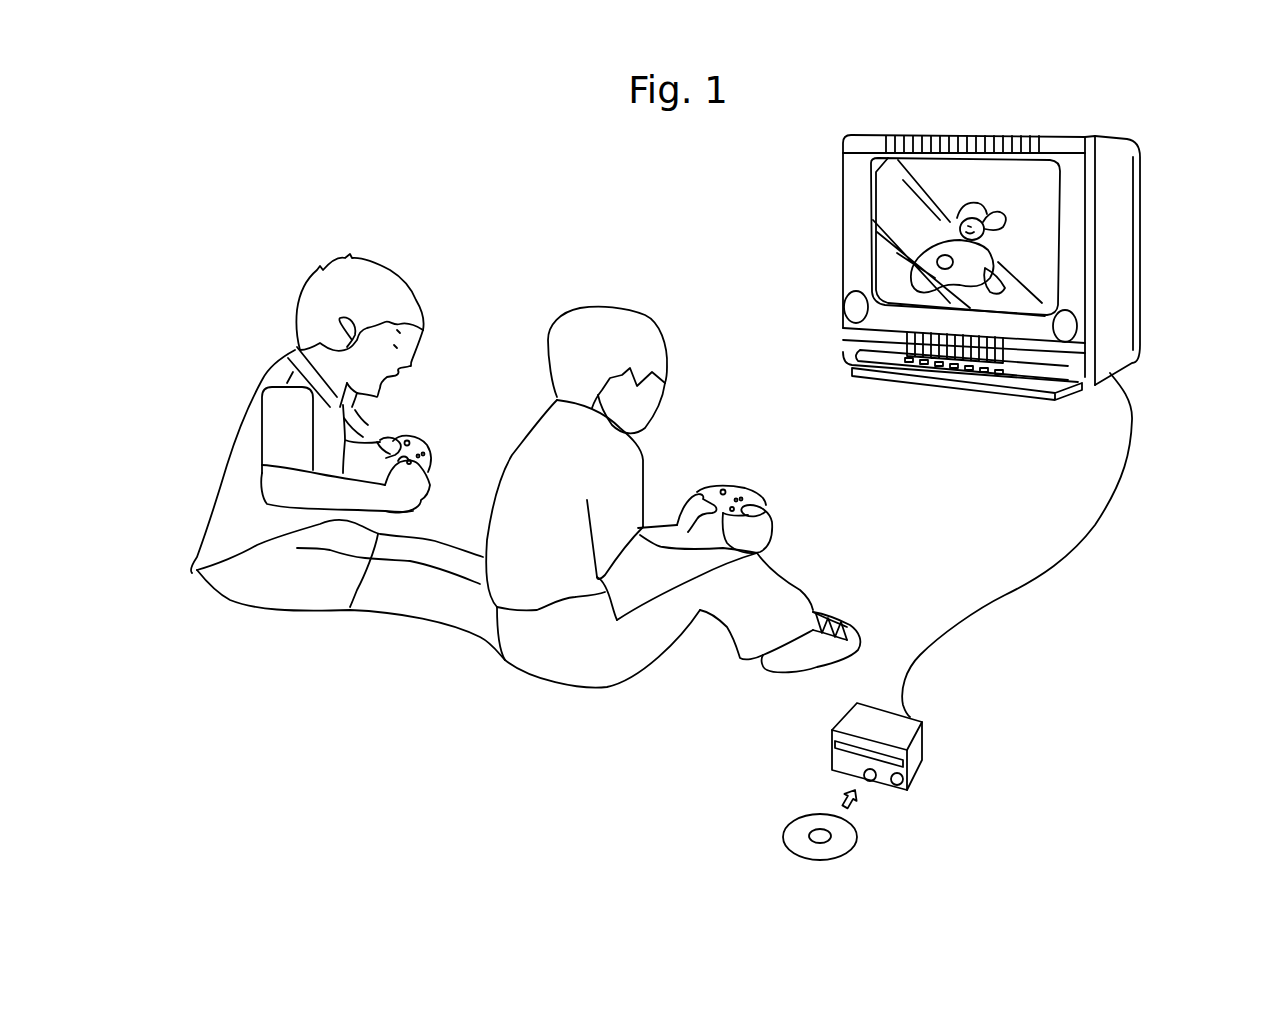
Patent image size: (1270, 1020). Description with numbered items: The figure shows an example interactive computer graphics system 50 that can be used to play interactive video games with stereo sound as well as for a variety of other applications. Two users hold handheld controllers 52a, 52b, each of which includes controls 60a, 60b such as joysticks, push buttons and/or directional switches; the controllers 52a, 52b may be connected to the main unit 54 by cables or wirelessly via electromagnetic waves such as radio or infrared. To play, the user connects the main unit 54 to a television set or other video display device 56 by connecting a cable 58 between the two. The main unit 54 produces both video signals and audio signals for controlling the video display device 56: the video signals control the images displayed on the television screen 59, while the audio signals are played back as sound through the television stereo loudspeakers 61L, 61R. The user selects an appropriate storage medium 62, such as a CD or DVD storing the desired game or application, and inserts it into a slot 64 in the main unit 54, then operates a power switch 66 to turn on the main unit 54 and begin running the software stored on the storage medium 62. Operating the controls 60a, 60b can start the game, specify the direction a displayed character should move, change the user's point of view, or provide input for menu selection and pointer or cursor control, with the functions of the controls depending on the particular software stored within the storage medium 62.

The interactive computer graphics system 50 is at (1070, 701).
The hand controller 52a is at (420, 437).
The hand controller 52b is at (747, 507).
The main unit 54 is at (882, 783).
The video display device 56 is at (1050, 137).
The cable 58 is at (1005, 592).
The television screen 59 is at (958, 177).
The controls 60a is at (407, 440).
The controls 60b is at (723, 490).
The television stereo loudspeaker 61L is at (847, 300).
The television stereo loudspeaker 61R is at (1073, 327).
The storage medium 62 is at (803, 845).
The slot 64 is at (837, 745).
The power switch 66 is at (900, 785).